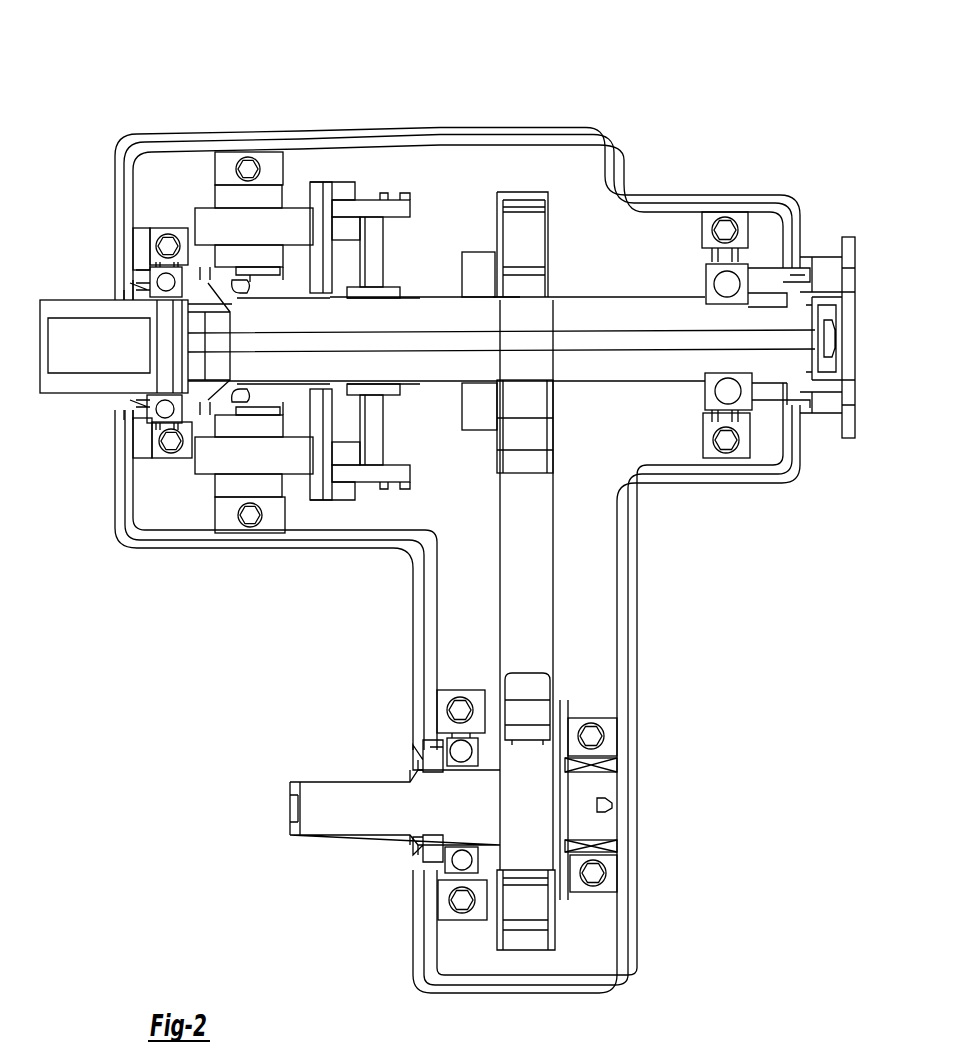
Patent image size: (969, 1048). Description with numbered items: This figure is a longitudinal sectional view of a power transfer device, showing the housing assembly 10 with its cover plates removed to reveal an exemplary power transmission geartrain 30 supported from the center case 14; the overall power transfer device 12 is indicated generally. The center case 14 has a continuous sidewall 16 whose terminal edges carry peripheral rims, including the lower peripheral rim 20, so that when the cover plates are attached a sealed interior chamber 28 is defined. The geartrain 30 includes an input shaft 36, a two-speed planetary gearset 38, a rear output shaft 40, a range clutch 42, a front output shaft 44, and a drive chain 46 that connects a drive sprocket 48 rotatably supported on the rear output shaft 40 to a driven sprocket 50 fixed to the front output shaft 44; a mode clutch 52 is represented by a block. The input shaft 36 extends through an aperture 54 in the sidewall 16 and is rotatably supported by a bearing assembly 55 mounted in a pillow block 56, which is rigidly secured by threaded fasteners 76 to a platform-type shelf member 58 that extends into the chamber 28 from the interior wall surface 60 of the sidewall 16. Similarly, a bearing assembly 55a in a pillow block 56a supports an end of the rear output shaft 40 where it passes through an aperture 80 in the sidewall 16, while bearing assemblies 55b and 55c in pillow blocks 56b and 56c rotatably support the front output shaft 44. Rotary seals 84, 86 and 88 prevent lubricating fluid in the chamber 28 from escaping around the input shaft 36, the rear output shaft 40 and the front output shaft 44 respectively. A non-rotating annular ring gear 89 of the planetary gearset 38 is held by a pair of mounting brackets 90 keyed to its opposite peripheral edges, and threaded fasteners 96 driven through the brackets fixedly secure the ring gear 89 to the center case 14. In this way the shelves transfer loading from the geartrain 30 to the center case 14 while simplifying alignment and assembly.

The housing assembly 10 is at (628, 124).
The housing 12 is at (492, 80).
The center case 14 is at (556, 128).
The sidewall 16 is at (625, 622).
The lower peripheral rim 20 is at (795, 466).
The interior chamber 28 is at (624, 268).
The power transmission geartrain 30 is at (412, 166).
The input shaft 36 is at (57, 312).
The two-speed planetary gearset 38 is at (180, 178).
The rear output shaft 40 is at (418, 318).
The range clutch 42 is at (400, 409).
The front output shaft 44 is at (335, 792).
The drive chain 46 is at (535, 540).
The drive sprocket 48 is at (538, 437).
The driven sprocket 50 is at (538, 708).
The mode clutch 52 is at (478, 260).
The aperture 54 is at (125, 410).
The bearing assembly 55 is at (155, 292).
The bearing assembly 55a is at (750, 258).
The bearing assembly 55b is at (612, 766).
The bearing assembly 55c is at (460, 752).
The pillow block 56 is at (148, 427).
The pillow block 56a is at (708, 440).
The pillow block 56b is at (616, 740).
The pillow block 56c is at (436, 892).
The shelf member 58 is at (147, 228).
The interior wall surface 60 is at (135, 546).
The threaded fasteners 76 is at (727, 228).
The aperture 80 is at (828, 284).
The rotary seal 84 is at (125, 283).
The rotary seal 86 is at (808, 280).
The rotary seal 88 is at (408, 750).
The annular ring gear 89 is at (270, 192).
The mounting brackets 90 is at (283, 516).
The threaded fasteners 96 is at (250, 515).